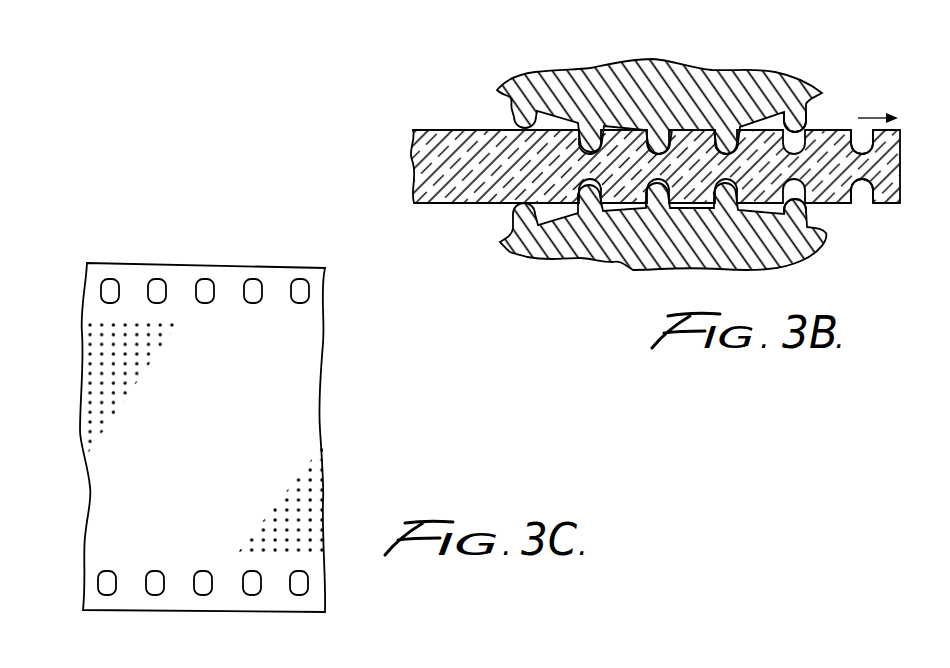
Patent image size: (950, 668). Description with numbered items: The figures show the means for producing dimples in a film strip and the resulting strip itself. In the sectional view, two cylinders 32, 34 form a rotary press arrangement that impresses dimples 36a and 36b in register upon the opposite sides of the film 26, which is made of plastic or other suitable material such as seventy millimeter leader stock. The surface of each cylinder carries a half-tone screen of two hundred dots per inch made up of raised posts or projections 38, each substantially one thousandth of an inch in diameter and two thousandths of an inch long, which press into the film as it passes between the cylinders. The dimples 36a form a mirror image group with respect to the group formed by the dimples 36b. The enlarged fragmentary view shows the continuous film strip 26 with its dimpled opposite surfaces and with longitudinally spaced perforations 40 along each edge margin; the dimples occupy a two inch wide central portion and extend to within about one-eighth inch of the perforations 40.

In FIG. 3B, the film strip 26 is at (450, 129).
In FIG. 3C, the film strip 26 is at (190, 272).
In FIG. 3B, the cylinder 32 is at (613, 248).
In FIG. 3B, the cylinder 34 is at (552, 72).
In FIG. 3B, the raised posts or projections 38 is at (798, 118).
In FIG. 3B, the dimples 36a is at (862, 134).
In FIG. 3C, the dimples 36a is at (97, 343).
In FIG. 3B, the dimples 36b is at (862, 202).
In FIG. 3C, the dimples 36b is at (173, 409).
In FIG. 3C, the perforations 40 is at (257, 288).